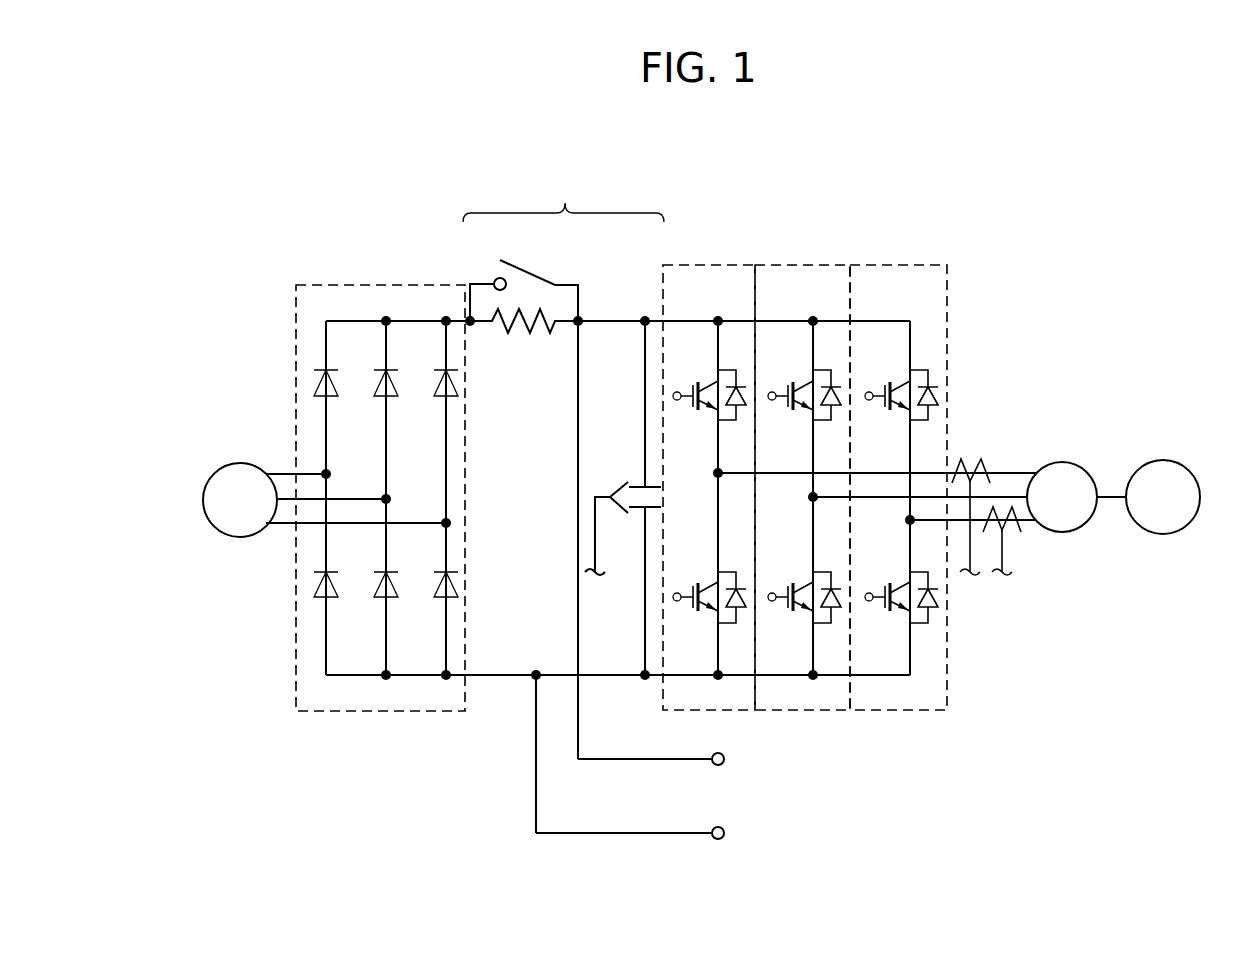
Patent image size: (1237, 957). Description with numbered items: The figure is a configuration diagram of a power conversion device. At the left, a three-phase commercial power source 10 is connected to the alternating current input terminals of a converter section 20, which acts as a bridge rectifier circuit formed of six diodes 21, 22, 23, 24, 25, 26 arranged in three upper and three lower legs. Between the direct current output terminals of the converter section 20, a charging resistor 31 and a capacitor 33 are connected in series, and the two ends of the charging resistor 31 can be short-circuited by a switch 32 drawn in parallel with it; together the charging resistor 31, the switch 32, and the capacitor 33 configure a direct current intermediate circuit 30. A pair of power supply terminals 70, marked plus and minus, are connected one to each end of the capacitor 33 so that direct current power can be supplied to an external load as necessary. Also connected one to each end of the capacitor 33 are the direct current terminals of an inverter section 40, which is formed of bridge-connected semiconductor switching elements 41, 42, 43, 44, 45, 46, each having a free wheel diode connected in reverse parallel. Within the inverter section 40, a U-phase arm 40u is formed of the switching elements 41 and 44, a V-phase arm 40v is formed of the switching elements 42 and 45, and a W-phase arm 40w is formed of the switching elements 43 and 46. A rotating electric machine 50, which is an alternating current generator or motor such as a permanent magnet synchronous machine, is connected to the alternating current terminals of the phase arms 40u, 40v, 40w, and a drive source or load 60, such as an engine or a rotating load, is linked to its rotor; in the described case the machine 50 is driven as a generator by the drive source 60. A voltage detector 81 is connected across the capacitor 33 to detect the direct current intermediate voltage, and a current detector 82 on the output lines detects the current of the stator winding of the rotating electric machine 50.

The commercial power source 10 is at (240, 523).
The converter section 20 is at (379, 543).
The diode 21 is at (333, 398).
The diode 22 is at (393, 398).
The diode 23 is at (432, 383).
The diode 24 is at (342, 588).
The diode 25 is at (393, 598).
The diode 26 is at (430, 583).
The direct current intermediate circuit 30 is at (563, 417).
The charging resistor 31 is at (519, 345).
The switch 32 is at (520, 260).
The capacitor 33 is at (637, 478).
The inverter section 40 is at (846, 502).
The U-phase arm 40u is at (700, 262).
The V-phase arm 40v is at (792, 262).
The W-phase arm 40w is at (900, 262).
The semiconductor switching element 41 is at (686, 412).
The semiconductor switching element 42 is at (781, 412).
The semiconductor switching element 43 is at (876, 412).
The semiconductor switching element 44 is at (685, 612).
The semiconductor switching element 45 is at (780, 612).
The semiconductor switching element 46 is at (876, 612).
The rotating electric machine 50 is at (1055, 522).
The drive source or load 60 is at (1153, 522).
The power supply terminals 70 is at (740, 750).
The voltage detector 81 is at (605, 487).
The current detector 82 is at (1025, 447).